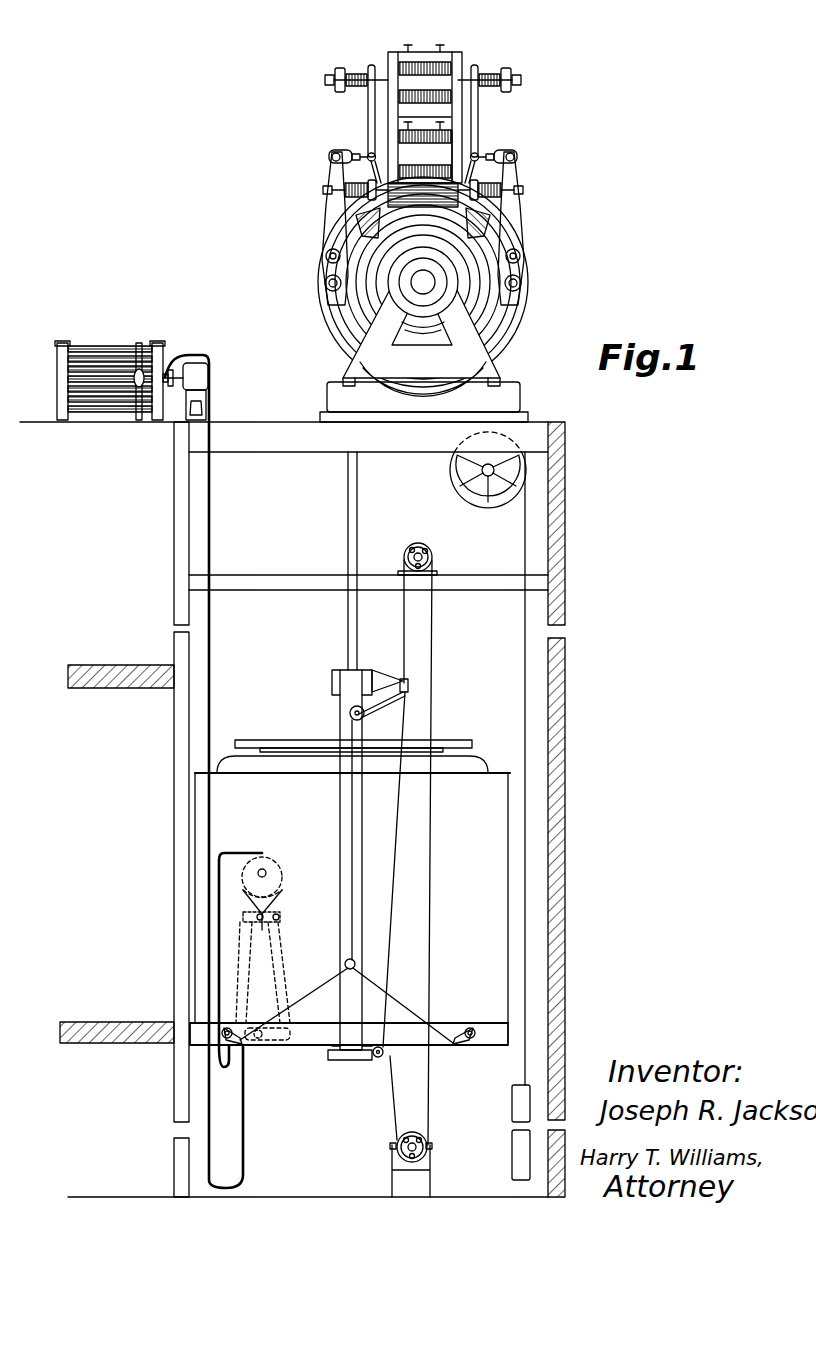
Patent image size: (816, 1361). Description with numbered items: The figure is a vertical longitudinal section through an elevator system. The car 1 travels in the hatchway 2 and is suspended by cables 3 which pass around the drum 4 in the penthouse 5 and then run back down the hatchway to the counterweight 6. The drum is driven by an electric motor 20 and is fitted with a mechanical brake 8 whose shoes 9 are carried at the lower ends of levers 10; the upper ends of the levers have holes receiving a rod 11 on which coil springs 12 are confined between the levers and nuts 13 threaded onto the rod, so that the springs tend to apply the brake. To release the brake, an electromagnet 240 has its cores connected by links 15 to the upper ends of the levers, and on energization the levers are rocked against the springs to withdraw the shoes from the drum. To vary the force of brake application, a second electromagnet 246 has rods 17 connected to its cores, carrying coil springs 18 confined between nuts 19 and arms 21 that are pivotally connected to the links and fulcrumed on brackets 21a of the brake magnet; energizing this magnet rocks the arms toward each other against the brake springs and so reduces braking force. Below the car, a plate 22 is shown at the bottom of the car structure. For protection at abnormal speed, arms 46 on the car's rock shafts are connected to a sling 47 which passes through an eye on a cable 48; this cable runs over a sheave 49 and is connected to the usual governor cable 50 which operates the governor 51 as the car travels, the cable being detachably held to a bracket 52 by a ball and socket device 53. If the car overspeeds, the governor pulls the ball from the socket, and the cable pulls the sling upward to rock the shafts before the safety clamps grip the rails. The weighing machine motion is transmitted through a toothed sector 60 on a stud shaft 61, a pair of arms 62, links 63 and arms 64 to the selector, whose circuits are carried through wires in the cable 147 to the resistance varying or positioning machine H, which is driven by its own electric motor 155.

The car 1 is at (196, 802).
The hatchway 2 is at (196, 726).
The cables 3 is at (347, 609).
The drum 4 is at (358, 270).
The penthouse 5 is at (258, 399).
The counterweight 6 is at (512, 1102).
The mechanical brake 8 is at (320, 258).
The shoes 9 is at (338, 302).
The levers 10 is at (324, 229).
The rod 11 is at (323, 190).
The coil springs 12 is at (345, 186).
The nuts 13 is at (332, 152).
The links 15 is at (355, 154).
The rods 17 is at (326, 78).
The coil springs 18 is at (342, 92).
The nuts 19 is at (350, 87).
The electric motor 20 is at (330, 207).
The arms 21 is at (368, 118).
The brackets 21a is at (400, 182).
The bottom plate 22 is at (476, 1030).
The arms 46 is at (242, 1046).
The sling 47 is at (420, 1003).
The cable 48 is at (340, 813).
The sheave 49 is at (350, 713).
The cable 50 is at (403, 650).
The governor 51 is at (432, 560).
The bracket 52 is at (390, 678).
The ball and socket device 53 is at (408, 688).
The toothed sector 60 is at (278, 894).
The stud shaft 61 is at (260, 929).
The arms 62 is at (256, 917).
The links 63 is at (278, 990).
The arms 64 is at (255, 1028).
The cable 147 is at (211, 648).
The electric motor 155 is at (198, 375).
The electromagnet 240 is at (456, 156).
The electromagnet 246 is at (390, 55).
The resistance varying or positioning machine H is at (54, 378).